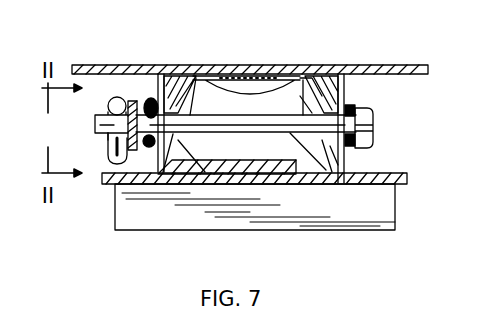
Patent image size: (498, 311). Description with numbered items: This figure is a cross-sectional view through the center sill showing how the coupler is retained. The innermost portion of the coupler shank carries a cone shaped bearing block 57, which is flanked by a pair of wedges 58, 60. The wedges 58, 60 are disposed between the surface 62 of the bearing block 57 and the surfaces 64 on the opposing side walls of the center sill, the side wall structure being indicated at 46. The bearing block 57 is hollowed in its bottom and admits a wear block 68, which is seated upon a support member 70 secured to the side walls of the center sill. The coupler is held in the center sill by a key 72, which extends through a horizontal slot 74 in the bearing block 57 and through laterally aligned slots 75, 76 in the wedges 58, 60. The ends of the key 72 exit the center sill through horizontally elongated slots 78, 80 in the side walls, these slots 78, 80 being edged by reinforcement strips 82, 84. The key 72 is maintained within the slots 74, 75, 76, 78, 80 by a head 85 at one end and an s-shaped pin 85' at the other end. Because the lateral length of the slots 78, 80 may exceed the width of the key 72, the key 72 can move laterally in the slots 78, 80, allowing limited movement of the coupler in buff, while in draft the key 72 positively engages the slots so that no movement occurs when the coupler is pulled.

The top plate 46 is at (287, 65).
The bearing block 57 is at (312, 78).
The wedge 58 is at (345, 90).
The wedge 60 is at (156, 80).
The surface of bearing block 62 is at (166, 92).
The surfaces on side wall 64 is at (151, 100).
The wear block 68 is at (247, 163).
The support member 70 is at (290, 172).
The key 72 is at (322, 173).
The horizontal slot 74 is at (248, 110).
The slot 75 is at (170, 141).
The slot 76 is at (320, 113).
The horizontally elongated slot 78 is at (144, 108).
The horizontally elongated slot 80 is at (368, 129).
The reinforcement strip 82 is at (146, 152).
The reinforcement strip 84 is at (350, 143).
The head 85 is at (414, 128).
The s-shaped pin 85' is at (89, 194).